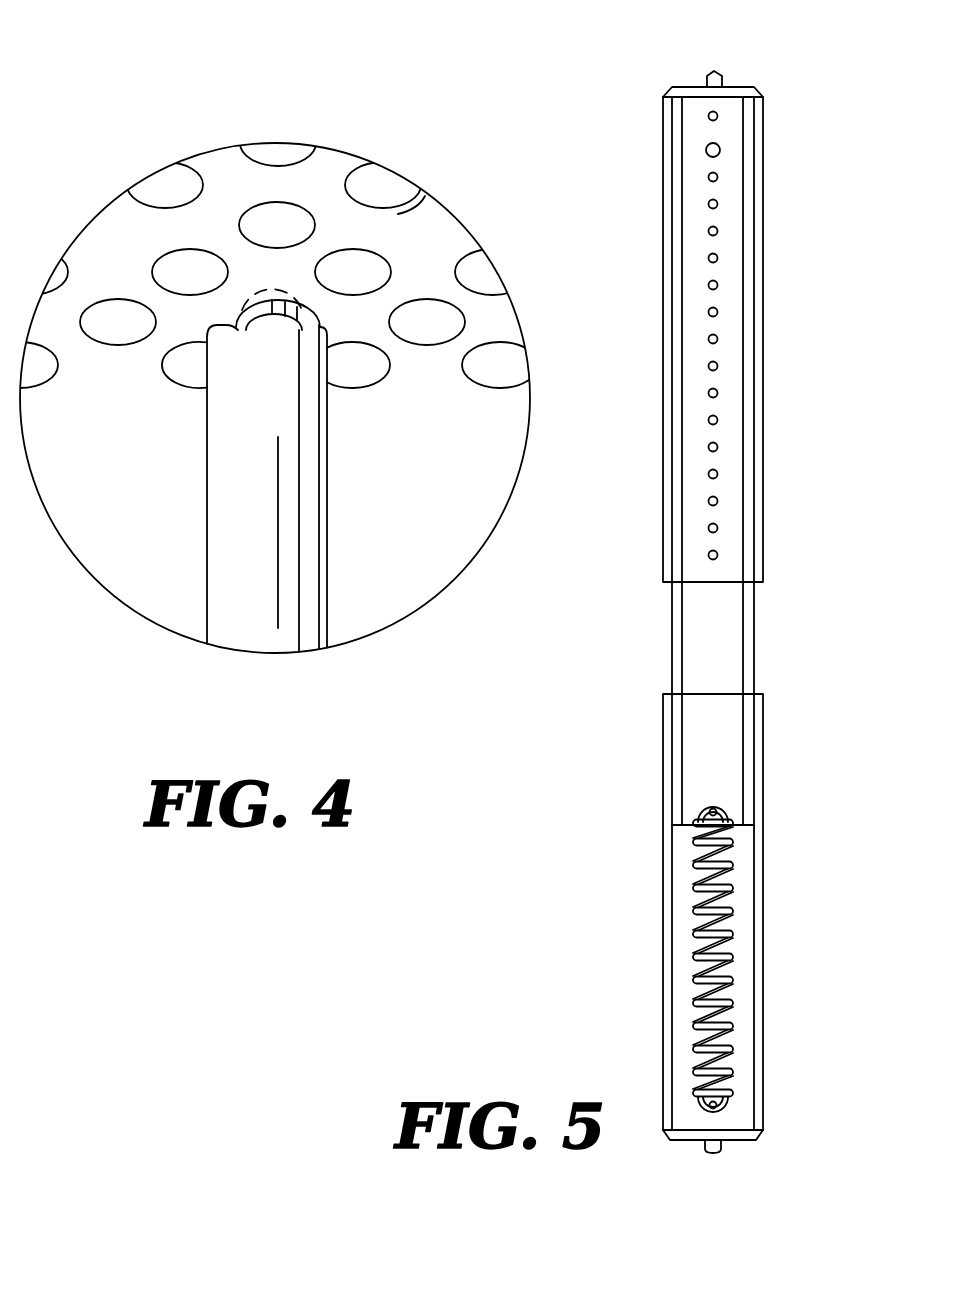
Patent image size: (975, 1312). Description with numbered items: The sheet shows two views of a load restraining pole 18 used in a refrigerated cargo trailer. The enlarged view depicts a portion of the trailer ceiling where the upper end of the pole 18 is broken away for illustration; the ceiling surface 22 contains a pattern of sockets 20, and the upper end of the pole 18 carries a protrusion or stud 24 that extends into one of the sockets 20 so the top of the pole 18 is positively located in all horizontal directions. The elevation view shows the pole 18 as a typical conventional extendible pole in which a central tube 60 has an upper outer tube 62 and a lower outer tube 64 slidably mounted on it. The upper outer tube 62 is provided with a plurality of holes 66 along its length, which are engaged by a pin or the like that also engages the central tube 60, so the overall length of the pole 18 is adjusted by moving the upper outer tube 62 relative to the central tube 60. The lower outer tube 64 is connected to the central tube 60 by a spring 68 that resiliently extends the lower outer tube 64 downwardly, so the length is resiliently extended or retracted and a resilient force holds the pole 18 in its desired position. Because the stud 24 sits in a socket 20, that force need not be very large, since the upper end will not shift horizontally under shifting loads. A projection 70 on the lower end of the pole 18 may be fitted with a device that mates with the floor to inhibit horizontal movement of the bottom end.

In FIG. 4, the pole 18 is at (299, 463).
In FIG. 5, the pole 18 is at (700, 626).
In FIG. 4, the socket 20 is at (423, 207).
In FIG. 4, the ceiling surface 22 is at (422, 242).
In FIG. 4, the stud 24 is at (248, 312).
In FIG. 5, the stud 24 is at (705, 82).
In FIG. 5, the central tube 60 is at (757, 630).
In FIG. 5, the upper outer tube 62 is at (763, 363).
In FIG. 5, the lower outer tube 64 is at (762, 900).
In FIG. 5, the holes 66 is at (718, 233).
In FIG. 5, the spring 68 is at (697, 915).
In FIG. 5, the projection 70 is at (706, 1150).